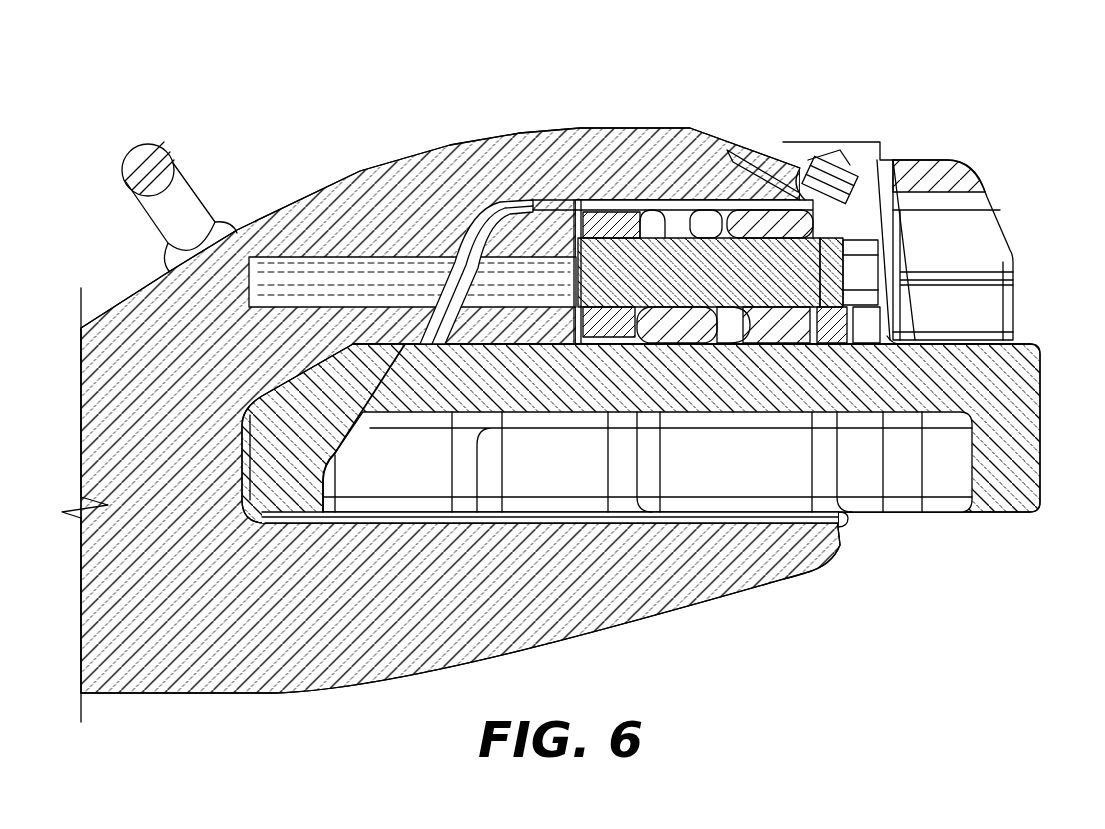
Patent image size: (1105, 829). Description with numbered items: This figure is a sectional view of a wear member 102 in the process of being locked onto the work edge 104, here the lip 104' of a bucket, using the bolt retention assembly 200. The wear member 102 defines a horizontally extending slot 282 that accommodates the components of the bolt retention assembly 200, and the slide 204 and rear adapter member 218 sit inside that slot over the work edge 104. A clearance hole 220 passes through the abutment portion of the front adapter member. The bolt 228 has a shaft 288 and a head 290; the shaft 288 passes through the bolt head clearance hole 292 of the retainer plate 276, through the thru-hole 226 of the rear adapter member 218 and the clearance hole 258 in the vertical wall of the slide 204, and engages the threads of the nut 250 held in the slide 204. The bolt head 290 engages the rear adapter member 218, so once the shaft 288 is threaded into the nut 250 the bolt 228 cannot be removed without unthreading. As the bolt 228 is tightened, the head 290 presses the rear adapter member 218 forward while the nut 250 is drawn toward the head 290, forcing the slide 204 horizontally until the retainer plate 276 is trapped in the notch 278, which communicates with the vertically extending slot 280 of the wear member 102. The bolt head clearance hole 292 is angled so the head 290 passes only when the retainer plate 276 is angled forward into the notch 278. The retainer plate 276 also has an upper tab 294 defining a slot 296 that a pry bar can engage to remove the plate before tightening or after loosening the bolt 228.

The wear member 102 is at (590, 120).
The work edge 104 is at (496, 366).
The lip 104' is at (835, 366).
The bolt retention assembly 200 is at (893, 158).
The slide 204 is at (699, 334).
The rear adapter member 218 is at (797, 335).
The clearance hole 220 is at (517, 283).
The thru-hole 226 is at (658, 205).
The bolt 228 is at (745, 297).
The nut 250 is at (602, 326).
The clearance hole 258 is at (748, 254).
The retainer plate 276 is at (805, 180).
The notch 278 is at (795, 168).
The vertically extending slot 280 is at (866, 186).
The horizontally extending slot 282 is at (948, 247).
The shaft 288 is at (682, 281).
The head 290 is at (860, 329).
The bolt head clearance hole 292 is at (897, 347).
The upper tab 294 is at (820, 165).
The slot 296 is at (795, 254).